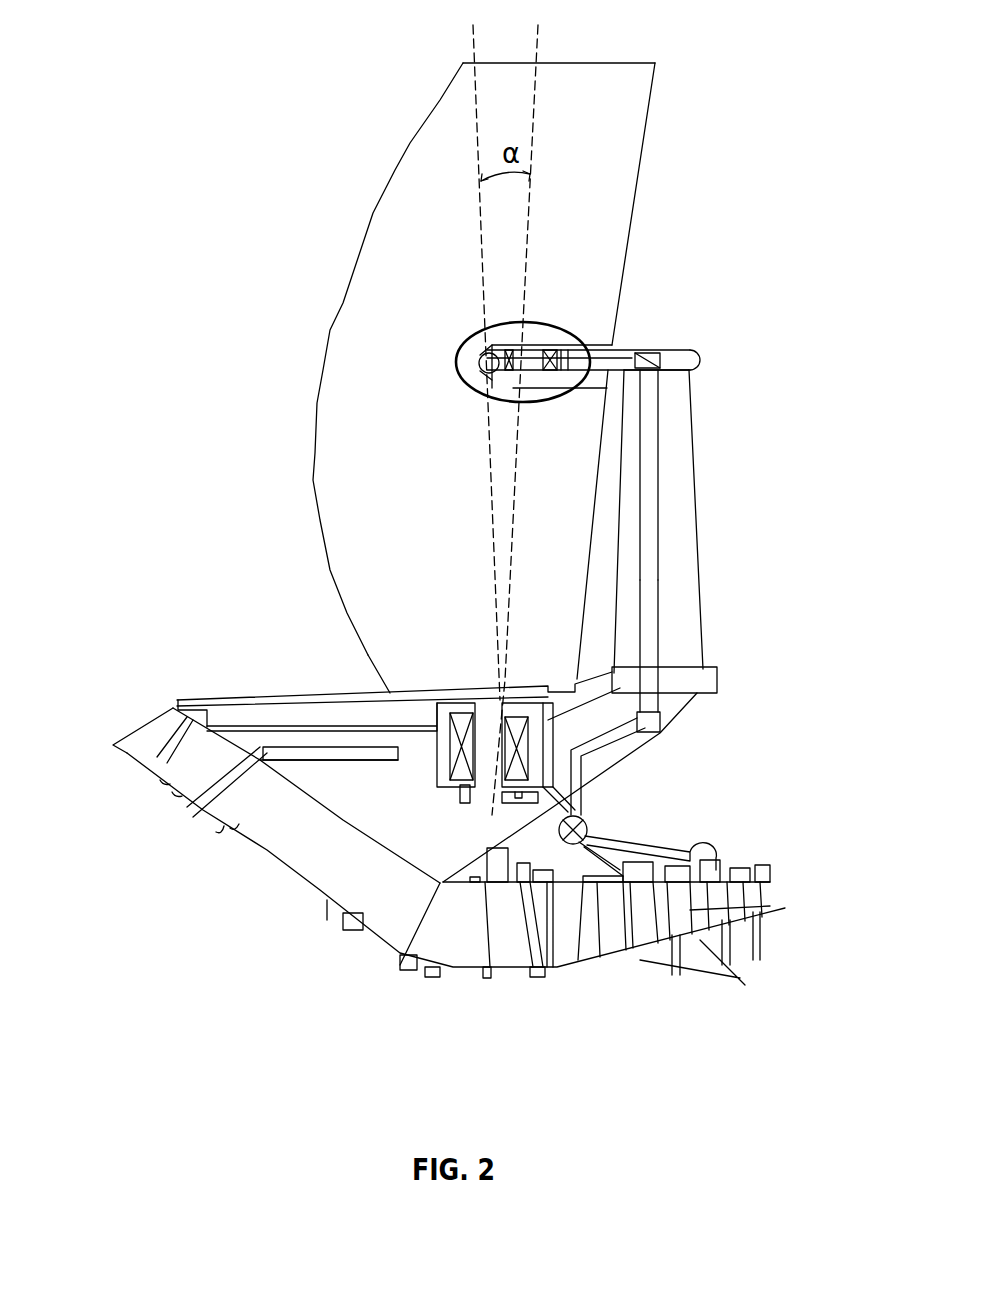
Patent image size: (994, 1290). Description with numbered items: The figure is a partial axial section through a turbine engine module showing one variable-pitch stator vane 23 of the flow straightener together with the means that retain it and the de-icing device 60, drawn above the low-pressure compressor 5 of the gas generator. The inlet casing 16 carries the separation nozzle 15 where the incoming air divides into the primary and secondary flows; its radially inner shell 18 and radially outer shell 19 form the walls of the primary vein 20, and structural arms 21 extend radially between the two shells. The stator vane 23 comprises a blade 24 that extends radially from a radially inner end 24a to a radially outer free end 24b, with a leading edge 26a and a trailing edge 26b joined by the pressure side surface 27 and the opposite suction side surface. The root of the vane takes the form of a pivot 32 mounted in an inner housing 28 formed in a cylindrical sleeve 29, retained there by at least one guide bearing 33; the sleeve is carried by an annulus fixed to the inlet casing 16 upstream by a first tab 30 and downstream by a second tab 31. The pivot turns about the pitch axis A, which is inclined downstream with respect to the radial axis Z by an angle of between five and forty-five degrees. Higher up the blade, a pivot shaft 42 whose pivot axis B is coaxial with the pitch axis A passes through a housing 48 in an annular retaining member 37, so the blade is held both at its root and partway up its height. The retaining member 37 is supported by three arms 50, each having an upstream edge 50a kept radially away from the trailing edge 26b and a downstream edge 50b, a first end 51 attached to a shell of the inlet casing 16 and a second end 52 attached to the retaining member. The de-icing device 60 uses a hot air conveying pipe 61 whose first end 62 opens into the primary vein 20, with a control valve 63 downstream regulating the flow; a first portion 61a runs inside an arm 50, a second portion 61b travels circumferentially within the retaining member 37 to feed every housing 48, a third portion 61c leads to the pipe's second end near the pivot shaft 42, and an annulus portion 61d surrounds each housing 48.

The low-pressure compressor 5 is at (608, 876).
The separation nozzle 15 is at (197, 705).
The inlet casing 16 is at (210, 760).
The radially inner shell 18 is at (253, 833).
The radially outer shell 19 is at (313, 800).
The primary vein 20 is at (470, 950).
The structural arms 21 is at (320, 867).
The stator vane 23 is at (478, 346).
The blade 24 is at (499, 346).
The radially inner end 24a is at (402, 677).
The radially outer free end 24b is at (630, 62).
The leading edge 26a is at (373, 215).
The trailing edge 26b is at (650, 147).
The pressure side surface 27 is at (353, 368).
The inner housing 28 is at (472, 710).
The sleeve 29 is at (385, 728).
The first tab 30 is at (270, 720).
The second tab 31 is at (593, 850).
The pivot 32 is at (490, 723).
The guide bearing 33 is at (437, 760).
The retaining member 37 is at (700, 355).
The pivot shaft 42 is at (527, 358).
The housing 48 is at (480, 367).
The arm 50 is at (648, 524).
The upstream edge 50a is at (617, 543).
The downstream edge 50b is at (698, 494).
The first end 51 is at (687, 657).
The second end 52 is at (682, 384).
The de-icing device 60 is at (660, 722).
The hot air conveying pipe 61 is at (594, 484).
The first portion 61a is at (660, 617).
The second portion 61b is at (655, 353).
The third portion 61c is at (630, 350).
The annulus portion 61d is at (497, 383).
The first end 62 is at (683, 860).
The control valve 63 is at (565, 840).
The radial axis Z is at (473, 50).
The pitch axis A is at (540, 32).
The pivot axis B is at (520, 383).